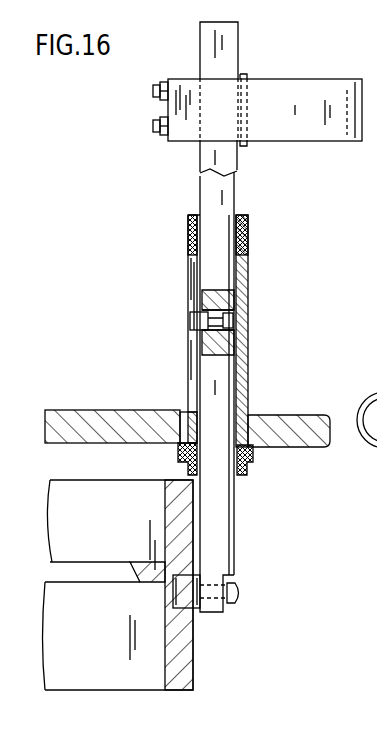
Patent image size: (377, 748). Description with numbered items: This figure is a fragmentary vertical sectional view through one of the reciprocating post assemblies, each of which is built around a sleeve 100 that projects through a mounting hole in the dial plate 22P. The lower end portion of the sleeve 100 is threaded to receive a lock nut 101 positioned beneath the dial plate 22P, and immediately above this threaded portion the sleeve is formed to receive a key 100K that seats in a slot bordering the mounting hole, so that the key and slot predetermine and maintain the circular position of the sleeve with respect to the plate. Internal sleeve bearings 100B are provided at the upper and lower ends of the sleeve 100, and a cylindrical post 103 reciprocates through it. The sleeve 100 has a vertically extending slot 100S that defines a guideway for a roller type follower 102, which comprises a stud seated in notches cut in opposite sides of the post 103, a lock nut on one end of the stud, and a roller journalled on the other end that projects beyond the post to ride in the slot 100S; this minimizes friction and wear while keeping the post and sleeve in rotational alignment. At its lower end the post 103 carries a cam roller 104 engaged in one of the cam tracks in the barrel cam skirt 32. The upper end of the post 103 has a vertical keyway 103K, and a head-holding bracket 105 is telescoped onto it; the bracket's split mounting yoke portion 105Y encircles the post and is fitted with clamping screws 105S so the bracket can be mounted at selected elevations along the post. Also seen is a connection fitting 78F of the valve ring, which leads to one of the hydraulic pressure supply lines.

The dial plate 22P is at (63, 420).
The barrel cam skirt 32 is at (187, 655).
The connection fitting 78F is at (373, 400).
The sleeve 100 is at (242, 360).
The internal sleeve bearings 100B is at (248, 233).
The vertically extending slot 100S is at (190, 265).
The key 100K is at (178, 415).
The lock nut 101 is at (255, 455).
The roller type follower 102 is at (190, 322).
The cylindrical post 103 is at (223, 541).
The vertical keyway 103K is at (243, 38).
The cam roller 104 is at (193, 600).
The head-holding bracket 105 is at (306, 86).
The split mounting yoke portion 105Y is at (188, 88).
The clamping screws 105S is at (155, 123).